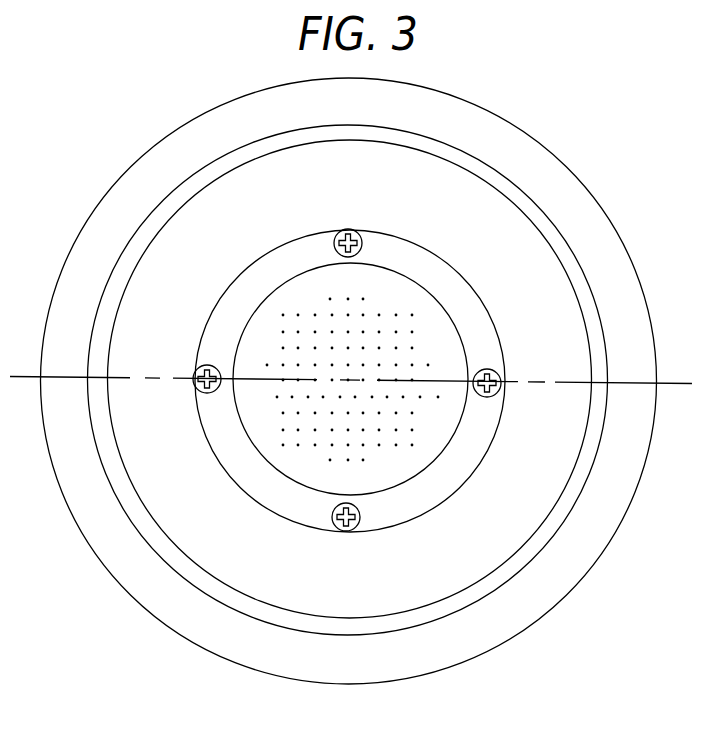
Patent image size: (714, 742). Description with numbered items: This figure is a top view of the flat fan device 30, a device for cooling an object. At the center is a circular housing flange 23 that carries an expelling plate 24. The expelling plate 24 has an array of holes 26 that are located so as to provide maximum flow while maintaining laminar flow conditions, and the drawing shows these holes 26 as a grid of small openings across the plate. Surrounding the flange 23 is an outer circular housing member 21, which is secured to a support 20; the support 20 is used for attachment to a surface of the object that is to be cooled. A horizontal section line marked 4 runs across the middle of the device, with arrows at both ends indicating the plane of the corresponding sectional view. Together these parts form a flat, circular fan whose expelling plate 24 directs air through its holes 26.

The flat fan device 30 is at (560, 152).
The support 20 is at (603, 527).
The outer circular housing member 21 is at (537, 547).
The circular housing flange 23 is at (480, 330).
The expelling plate 24 is at (387, 325).
The holes 26 is at (390, 445).
The section line 4- 4 is at (14, 363).